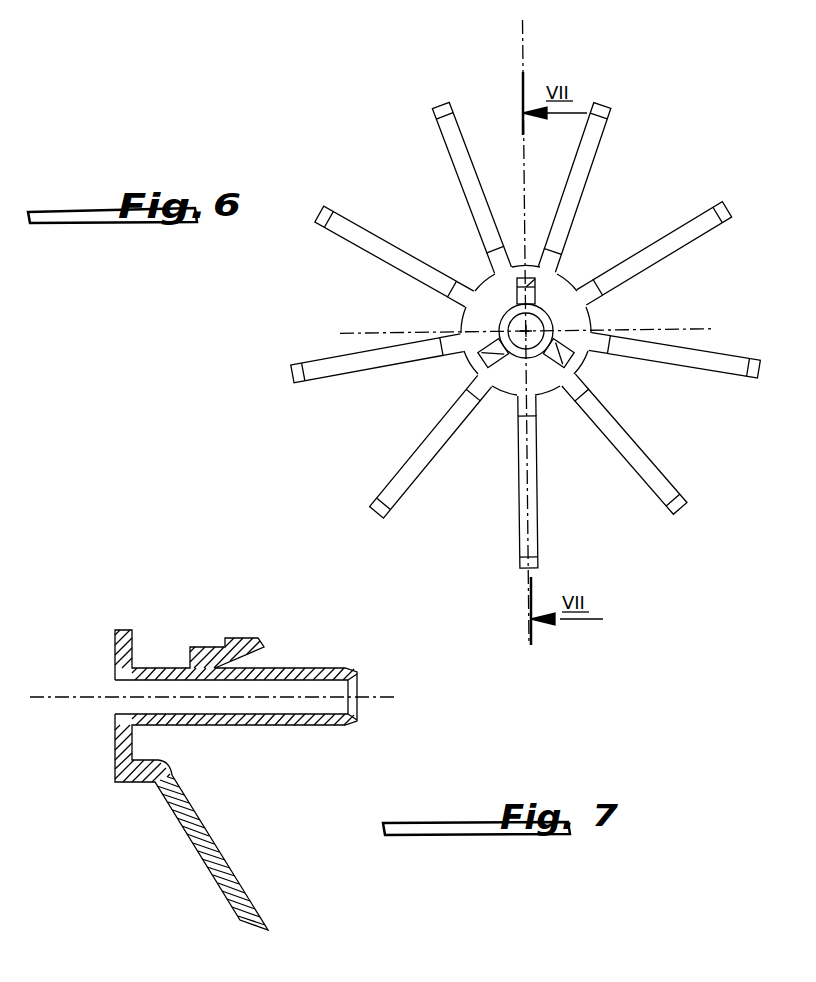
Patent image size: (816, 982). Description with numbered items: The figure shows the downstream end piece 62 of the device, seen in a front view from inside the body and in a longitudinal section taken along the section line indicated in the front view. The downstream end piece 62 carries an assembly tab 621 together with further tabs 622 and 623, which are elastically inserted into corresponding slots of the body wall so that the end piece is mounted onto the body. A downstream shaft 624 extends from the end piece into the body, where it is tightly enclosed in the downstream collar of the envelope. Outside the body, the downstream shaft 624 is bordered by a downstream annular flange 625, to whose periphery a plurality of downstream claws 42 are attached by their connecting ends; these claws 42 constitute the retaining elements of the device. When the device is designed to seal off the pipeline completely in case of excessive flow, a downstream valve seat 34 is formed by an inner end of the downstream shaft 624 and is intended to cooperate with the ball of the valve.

In FIG. 6, the downstream claw 42 is at (343, 219).
In FIG. 7, the downstream claw 42 is at (203, 860).
In FIG. 6, the downstream end piece 62 is at (228, 307).
In FIG. 7, the downstream end piece 62 is at (92, 657).
In FIG. 6, the assembly tab 621 is at (560, 274).
In FIG. 7, the assembly tab 621 is at (250, 637).
In FIG. 6, the tab 622 is at (580, 362).
In FIG. 6, the tab 623 is at (490, 387).
In FIG. 7, the downstream shaft 624 is at (272, 722).
In FIG. 7, the downstream annular flange 625 is at (116, 630).
In FIG. 7, the downstream valve seat 34 is at (363, 721).